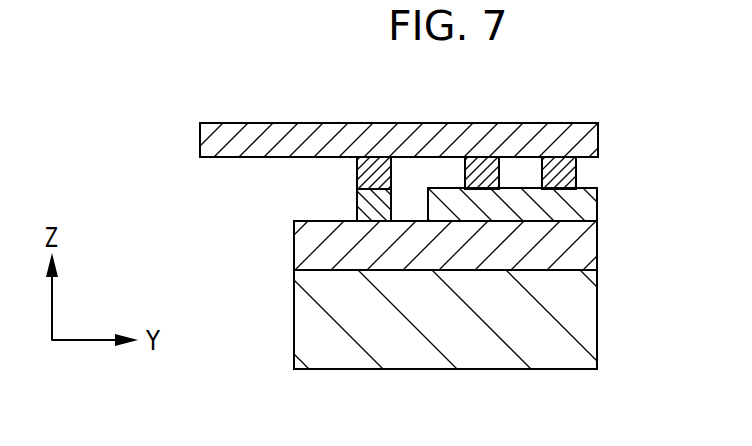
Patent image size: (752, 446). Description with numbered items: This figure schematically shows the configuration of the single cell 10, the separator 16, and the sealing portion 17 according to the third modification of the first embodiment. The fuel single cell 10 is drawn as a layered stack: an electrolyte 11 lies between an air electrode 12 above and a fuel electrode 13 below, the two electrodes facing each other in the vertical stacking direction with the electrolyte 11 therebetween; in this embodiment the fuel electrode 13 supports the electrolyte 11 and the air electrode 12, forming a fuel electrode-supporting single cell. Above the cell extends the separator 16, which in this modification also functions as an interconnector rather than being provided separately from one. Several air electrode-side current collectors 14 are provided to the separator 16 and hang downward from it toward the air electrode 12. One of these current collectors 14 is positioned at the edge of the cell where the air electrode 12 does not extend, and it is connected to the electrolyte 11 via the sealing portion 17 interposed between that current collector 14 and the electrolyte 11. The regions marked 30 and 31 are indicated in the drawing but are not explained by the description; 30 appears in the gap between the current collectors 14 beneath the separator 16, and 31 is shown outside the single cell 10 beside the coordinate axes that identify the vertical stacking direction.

The fuel single cell 10 is at (497, 278).
The electrolyte 11 is at (578, 246).
The air electrode 12 is at (578, 209).
The fuel electrode 13 is at (473, 319).
The air electrode-side current collector 14 is at (372, 172).
The separator 16 is at (247, 137).
The sealing portion 17 is at (372, 202).
The space 30 is at (425, 188).
The outer region 31 is at (250, 353).